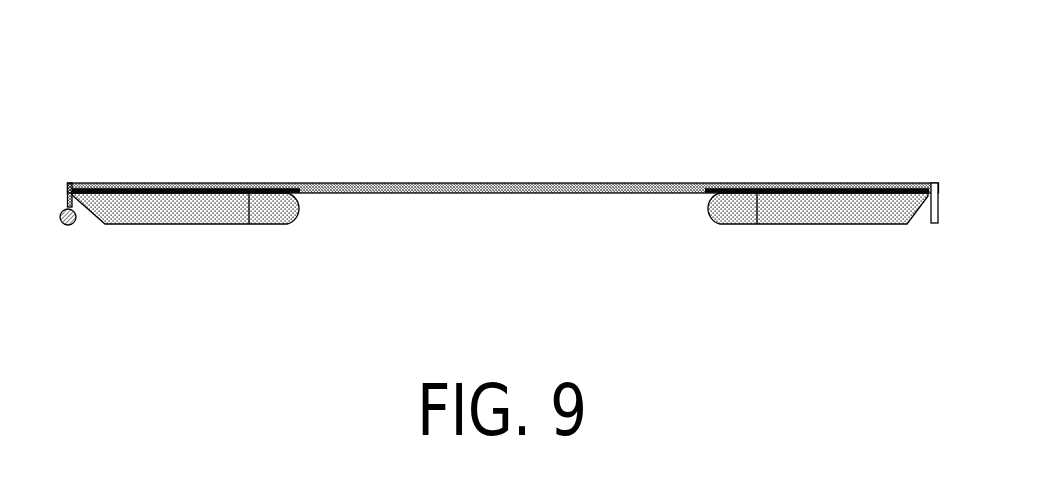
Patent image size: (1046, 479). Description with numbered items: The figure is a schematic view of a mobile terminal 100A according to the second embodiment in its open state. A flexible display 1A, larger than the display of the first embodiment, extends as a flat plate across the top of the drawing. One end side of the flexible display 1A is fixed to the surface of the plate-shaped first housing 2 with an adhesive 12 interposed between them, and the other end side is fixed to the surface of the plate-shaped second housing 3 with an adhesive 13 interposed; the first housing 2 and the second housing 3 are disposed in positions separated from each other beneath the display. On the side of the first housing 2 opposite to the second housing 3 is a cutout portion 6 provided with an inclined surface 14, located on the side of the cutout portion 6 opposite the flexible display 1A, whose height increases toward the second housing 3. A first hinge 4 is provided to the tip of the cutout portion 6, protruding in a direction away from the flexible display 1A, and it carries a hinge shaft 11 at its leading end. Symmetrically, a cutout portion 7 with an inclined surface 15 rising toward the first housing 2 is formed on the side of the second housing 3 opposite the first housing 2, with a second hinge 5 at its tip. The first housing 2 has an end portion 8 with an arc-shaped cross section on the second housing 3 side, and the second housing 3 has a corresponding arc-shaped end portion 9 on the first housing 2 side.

The mobile terminal 100A is at (583, 110).
The flexible display 1A is at (497, 183).
The first housing 2 is at (188, 226).
The second housing 3 is at (818, 226).
The first hinge 4 is at (79, 192).
The second hinge 5 is at (927, 197).
The cutout portion 6 is at (95, 197).
The cutout portion 7 is at (913, 200).
The end portion 8 is at (298, 212).
The end portion 9 is at (712, 212).
The hinge shaft 11 is at (71, 226).
The adhesive 12 is at (248, 226).
The adhesive 13 is at (757, 226).
The inclined surface 14 is at (88, 214).
The inclined surface 15 is at (913, 223).